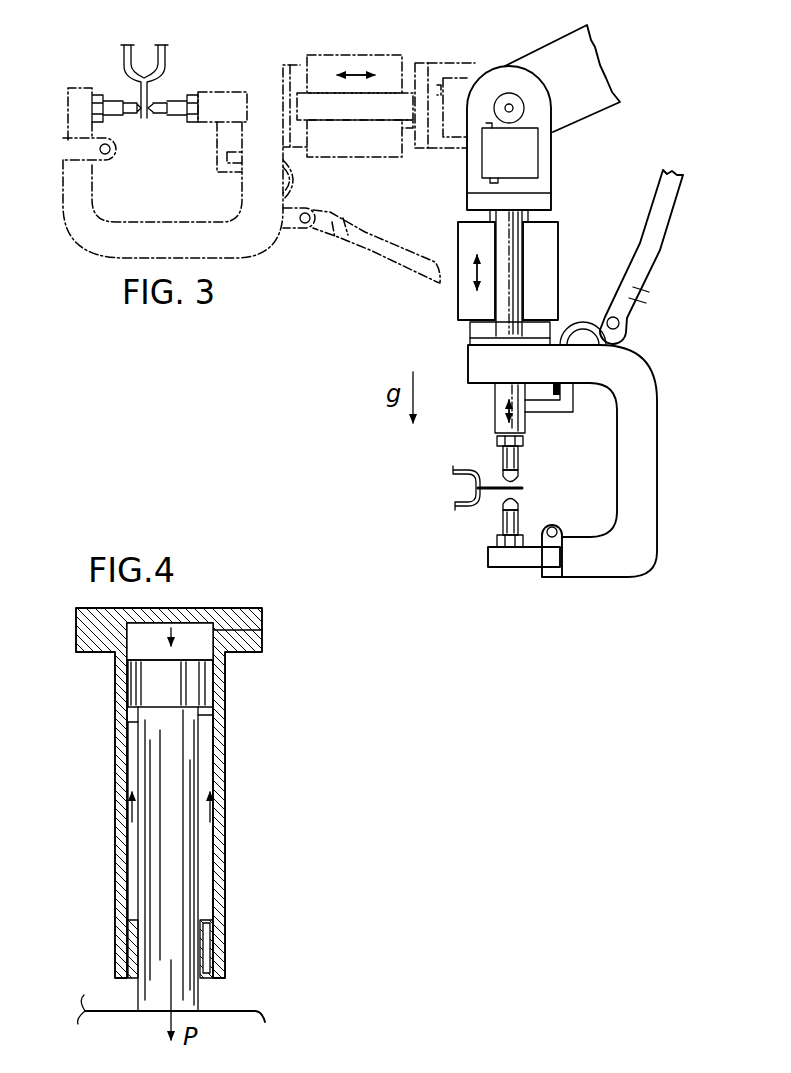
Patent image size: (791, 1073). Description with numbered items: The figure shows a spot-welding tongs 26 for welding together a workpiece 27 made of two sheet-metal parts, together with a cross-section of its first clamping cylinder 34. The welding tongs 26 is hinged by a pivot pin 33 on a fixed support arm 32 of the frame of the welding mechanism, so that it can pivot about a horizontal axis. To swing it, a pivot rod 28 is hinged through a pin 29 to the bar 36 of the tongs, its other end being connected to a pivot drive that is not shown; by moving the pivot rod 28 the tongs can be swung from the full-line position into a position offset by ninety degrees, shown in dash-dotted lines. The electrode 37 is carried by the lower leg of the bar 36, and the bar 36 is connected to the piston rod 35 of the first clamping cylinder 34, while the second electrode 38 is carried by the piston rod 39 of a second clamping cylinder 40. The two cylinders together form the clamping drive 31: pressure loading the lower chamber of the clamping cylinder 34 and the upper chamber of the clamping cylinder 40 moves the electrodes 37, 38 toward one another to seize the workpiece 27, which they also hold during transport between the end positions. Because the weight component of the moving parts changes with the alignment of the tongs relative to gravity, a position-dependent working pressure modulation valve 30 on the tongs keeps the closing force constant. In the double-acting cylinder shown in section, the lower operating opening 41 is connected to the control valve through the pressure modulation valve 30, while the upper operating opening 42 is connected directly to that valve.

In FIG. 3, the spot-welding tongs 26 is at (484, 524).
In FIG. 3, the workpiece 27 is at (466, 478).
In FIG. 3, the pivot rod 28 is at (654, 197).
In FIG. 3, the pin 29 is at (619, 326).
In FIG. 3, the pressure modulation valve 30 is at (522, 168).
In FIG. 3, the clamping drive 31 is at (566, 270).
In FIG. 3, the support arm 32 is at (577, 88).
In FIG. 3, the pivot pin 33 is at (509, 104).
In FIG. 3, the first clamping cylinder 34 is at (497, 248).
In FIG. 4, the first clamping cylinder 34 is at (227, 787).
In FIG. 3, the piston rod 35 is at (521, 330).
In FIG. 4, the piston rod 35 is at (207, 995).
In FIG. 3, the bar 36 is at (468, 364).
In FIG. 4, the bar 36 is at (169, 997).
In FIG. 3, the spot-welding electrode 37 is at (521, 497).
In FIG. 3, the spot-welding electrode 38 is at (518, 477).
In FIG. 3, the piston rod 39 is at (494, 430).
In FIG. 3, the second clamping cylinder 40 is at (550, 222).
In FIG. 4, the lower operating opening 41 is at (222, 973).
In FIG. 4, the upper operating opening 42 is at (262, 630).